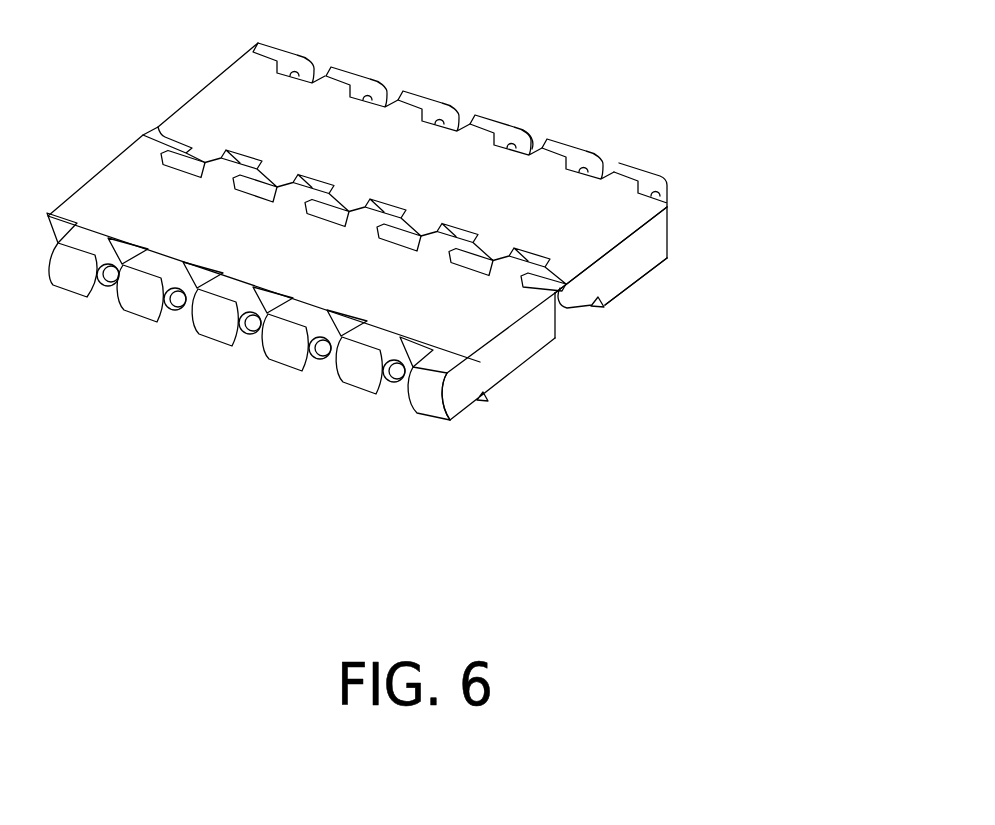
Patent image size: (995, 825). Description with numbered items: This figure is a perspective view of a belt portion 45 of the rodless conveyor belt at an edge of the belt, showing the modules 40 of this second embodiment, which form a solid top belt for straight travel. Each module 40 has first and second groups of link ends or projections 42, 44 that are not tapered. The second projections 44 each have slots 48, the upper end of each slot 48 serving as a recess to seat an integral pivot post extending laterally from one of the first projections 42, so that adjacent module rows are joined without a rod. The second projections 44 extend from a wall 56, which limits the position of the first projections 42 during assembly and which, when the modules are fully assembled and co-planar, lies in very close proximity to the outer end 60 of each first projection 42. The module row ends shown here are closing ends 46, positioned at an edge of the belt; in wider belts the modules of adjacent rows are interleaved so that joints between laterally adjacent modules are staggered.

The module 40 is at (662, 261).
The first projections 42 is at (355, 382).
The second projections 44 is at (423, 97).
The belt portion 45 is at (647, 69).
The closing ends 46 is at (622, 268).
The slots 48 is at (316, 72).
The wall 56 is at (527, 138).
The outer end 60 is at (560, 323).